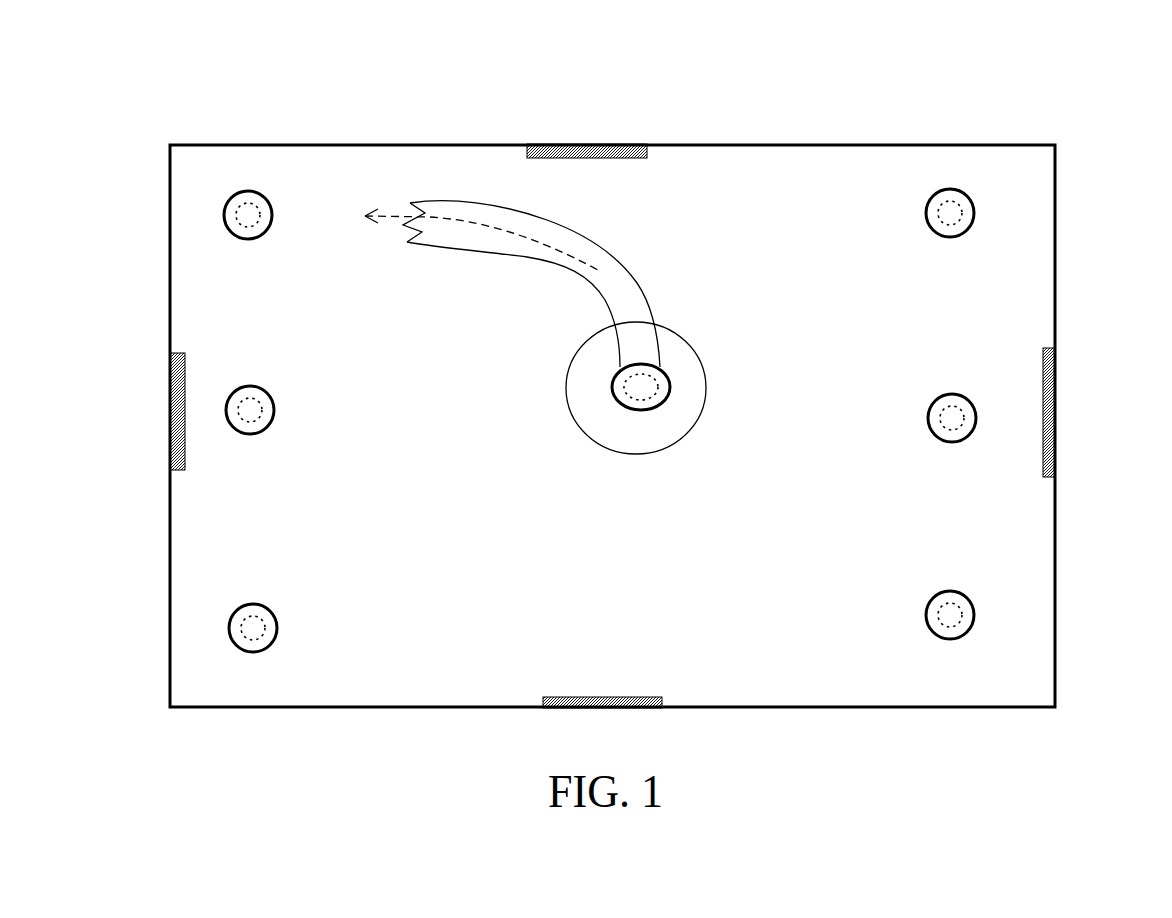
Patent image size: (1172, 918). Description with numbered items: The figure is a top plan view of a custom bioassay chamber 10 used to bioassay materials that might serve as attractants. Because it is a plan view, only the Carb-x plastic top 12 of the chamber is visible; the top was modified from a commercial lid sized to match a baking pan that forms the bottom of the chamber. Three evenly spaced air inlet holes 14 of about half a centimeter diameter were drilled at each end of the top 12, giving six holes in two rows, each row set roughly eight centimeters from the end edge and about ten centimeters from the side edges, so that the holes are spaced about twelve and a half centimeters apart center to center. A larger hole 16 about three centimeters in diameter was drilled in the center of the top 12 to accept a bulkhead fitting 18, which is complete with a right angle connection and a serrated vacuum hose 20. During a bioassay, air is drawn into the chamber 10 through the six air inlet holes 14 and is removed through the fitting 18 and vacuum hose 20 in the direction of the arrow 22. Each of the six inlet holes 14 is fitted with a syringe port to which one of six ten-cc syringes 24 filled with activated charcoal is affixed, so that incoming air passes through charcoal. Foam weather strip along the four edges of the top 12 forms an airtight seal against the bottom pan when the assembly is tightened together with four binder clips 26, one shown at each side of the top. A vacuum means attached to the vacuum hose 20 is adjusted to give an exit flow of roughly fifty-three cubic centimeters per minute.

The bioassay chamber 10 is at (745, 98).
The Carb-x plastic top 12 is at (822, 178).
The air inlet holes 14 is at (232, 222).
The hole 16 is at (653, 377).
The bulkhead fitting 18 is at (613, 453).
The serrated vacuum hose 20 is at (638, 282).
The arrow 22 is at (590, 260).
The syringes 24 is at (223, 215).
The binder clips 26 is at (583, 140).